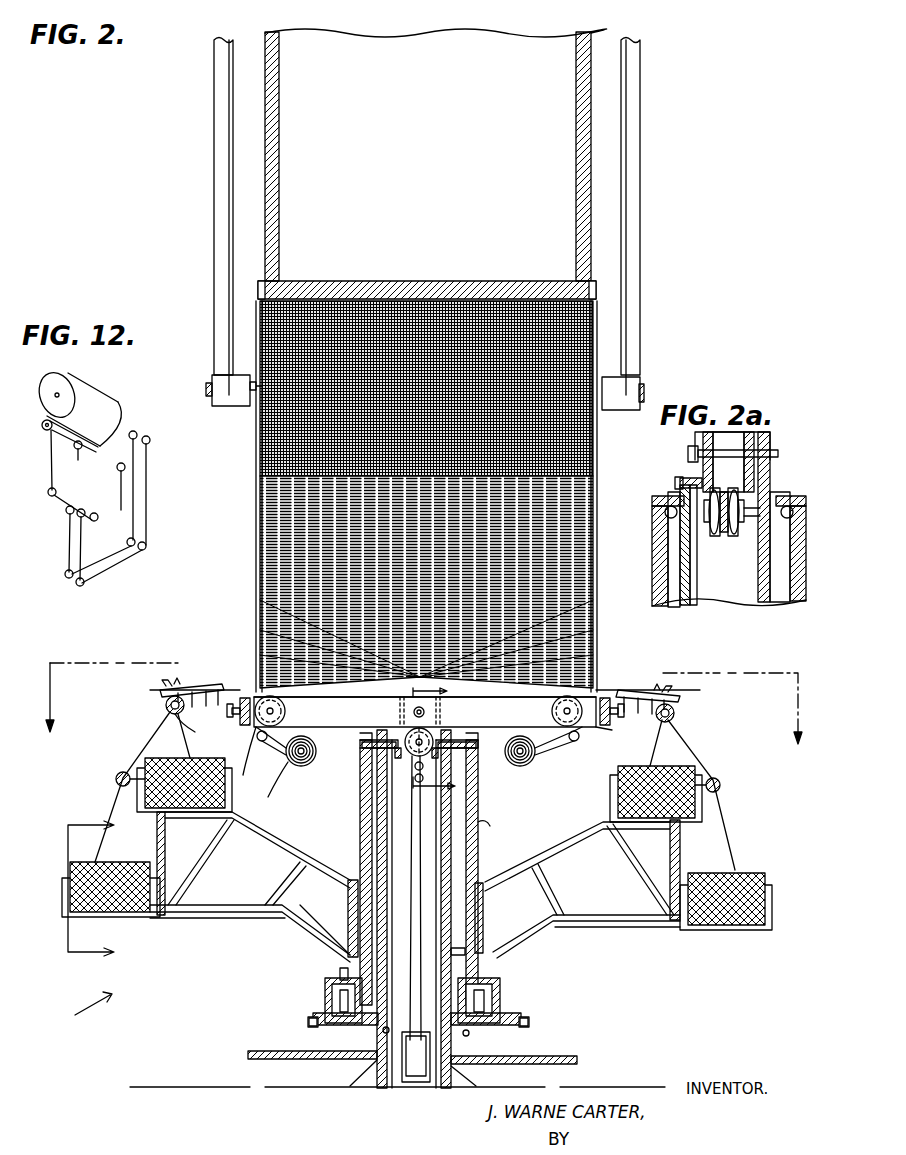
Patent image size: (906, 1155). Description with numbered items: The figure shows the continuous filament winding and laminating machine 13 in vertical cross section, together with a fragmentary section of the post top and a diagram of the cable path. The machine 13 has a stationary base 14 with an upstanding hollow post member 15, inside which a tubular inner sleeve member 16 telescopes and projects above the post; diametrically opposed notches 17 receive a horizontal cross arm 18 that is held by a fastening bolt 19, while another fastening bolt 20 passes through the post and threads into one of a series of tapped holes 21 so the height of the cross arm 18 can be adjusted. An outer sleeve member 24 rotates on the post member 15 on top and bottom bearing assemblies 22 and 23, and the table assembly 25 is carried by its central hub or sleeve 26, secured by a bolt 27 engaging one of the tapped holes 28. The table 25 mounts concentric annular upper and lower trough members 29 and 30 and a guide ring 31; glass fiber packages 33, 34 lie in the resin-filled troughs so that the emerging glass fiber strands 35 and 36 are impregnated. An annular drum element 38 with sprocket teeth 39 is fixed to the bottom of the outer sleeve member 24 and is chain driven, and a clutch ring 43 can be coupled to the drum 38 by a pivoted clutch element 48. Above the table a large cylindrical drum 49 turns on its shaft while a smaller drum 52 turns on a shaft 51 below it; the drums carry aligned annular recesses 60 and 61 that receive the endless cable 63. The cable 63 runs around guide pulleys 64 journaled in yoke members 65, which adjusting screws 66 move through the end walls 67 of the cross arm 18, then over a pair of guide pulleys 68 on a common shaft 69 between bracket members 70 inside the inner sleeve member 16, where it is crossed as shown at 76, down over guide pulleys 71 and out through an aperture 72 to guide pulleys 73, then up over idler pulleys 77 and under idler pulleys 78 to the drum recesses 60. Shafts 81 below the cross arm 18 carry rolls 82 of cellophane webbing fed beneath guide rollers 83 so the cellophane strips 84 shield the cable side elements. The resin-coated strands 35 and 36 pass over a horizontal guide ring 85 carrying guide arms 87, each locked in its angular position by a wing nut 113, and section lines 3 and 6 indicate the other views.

In FIG. 2, the section line 3- 3 is at (424, 703).
In FIG. 2, the section line 6- 6 is at (91, 888).
In FIG. 2, the continuous filament winding and laminating machine 13 is at (82, 1010).
In FIG. 2, the stationary base 14 is at (248, 1052).
In FIG. 2, the post member 15 is at (376, 1090).
In FIG. 2a, the post member 15 is at (690, 602).
In FIG. 2, the inner sleeve member 16 is at (412, 914).
In FIG. 2a, the inner sleeve member 16 is at (771, 602).
In FIG. 2, the notches 17 is at (387, 723).
In FIG. 2a, the notches 17 is at (728, 462).
In FIG. 2, the cross arm 18 is at (336, 728).
In FIG. 2a, the cross arm 18 is at (772, 440).
In FIG. 2, the fastening bolt 19 is at (418, 709).
In FIG. 2a, the fastening bolt 19 is at (688, 450).
In FIG. 2a, the fastening bolt 20 is at (675, 484).
In FIG. 2a, the tapped holes 21 is at (697, 560).
In FIG. 2, the top bearing assembly 22 is at (476, 773).
In FIG. 2a, the top bearing assembly 22 is at (680, 520).
In FIG. 2, the bottom bearing assembly 23 is at (472, 1033).
In FIG. 2, the outer sleeve member 24 is at (390, 767).
In FIG. 2a, the outer sleeve member 24 is at (655, 590).
In FIG. 2, the table assembly 25 is at (579, 925).
In FIG. 2, the central hub or sleeve 26 is at (484, 912).
In FIG. 2, the bolt 27 is at (505, 953).
In FIG. 2, the tapped holes 28 is at (486, 829).
In FIG. 2, the upper trough member 29 is at (683, 830).
In FIG. 2, the lower trough member 30 is at (758, 930).
In FIG. 2, the guide ring 31 is at (725, 782).
In FIG. 2, the glass fiber package 33 is at (640, 766).
In FIG. 2, the glass fiber package 34 is at (760, 872).
In FIG. 2, the glass fiber strand 35 is at (684, 706).
In FIG. 2, the glass fiber strand 36 is at (698, 743).
In FIG. 2, the annular drum element 38 is at (325, 1000).
In FIG. 2, the sprocket teeth 39 is at (520, 1012).
In FIG. 2, the clutch ring 43 is at (324, 984).
In FIG. 2, the pivoted clutch element 48 is at (338, 950).
In FIG. 2, the cylindrical drum 49 is at (452, 281).
In FIG. 12, the cylindrical drum 49 is at (50, 383).
In FIG. 2, the shaft 51 is at (255, 383).
In FIG. 2, the smaller drum 52 is at (256, 442).
In FIG. 12, the smaller drum 52 is at (44, 432).
In FIG. 2, the annular recesses 60 is at (292, 280).
In FIG. 2, the annular recesses 61 is at (256, 480).
In FIG. 12, the endless cable 63 is at (51, 462).
In FIG. 2, the guide pulleys 64 is at (286, 712).
In FIG. 12, the guide pulleys 64 is at (50, 497).
In FIG. 2, the yoke members 65 is at (254, 730).
In FIG. 2, the adjusting screws 66 is at (610, 739).
In FIG. 2, the end walls 67 is at (601, 703).
In FIG. 12, the guide pulleys 68 is at (66, 515).
In FIG. 2a, the guide pulleys 68 is at (720, 528).
In FIG. 2a, the common shaft 69 is at (760, 510).
In FIG. 2, the bracket members 70 is at (398, 752).
In FIG. 2a, the bracket members 70 is at (748, 520).
In FIG. 2, the guide pulleys 71 is at (410, 1078).
In FIG. 12, the guide pulleys 71 is at (65, 579).
In FIG. 2, the aperture 72 is at (418, 1083).
In FIG. 12, the guide pulleys 73 is at (129, 537).
In FIG. 12, the crossing of cable 76 is at (66, 545).
In FIG. 12, the idler pulleys 77 is at (135, 430).
In FIG. 12, the idler pulleys 78 is at (92, 458).
In FIG. 2, the shafts 81 is at (301, 766).
In FIG. 2, the rolls of cellophane webbing 82 is at (272, 788).
In FIG. 2, the guide rollers 83 is at (246, 763).
In FIG. 2, the cellophane strips 84 is at (276, 748).
In FIG. 2, the guide ring 85 is at (178, 722).
In FIG. 2, the guide arms 87 is at (158, 696).
In FIG. 2, the wing nut 113 is at (185, 688).